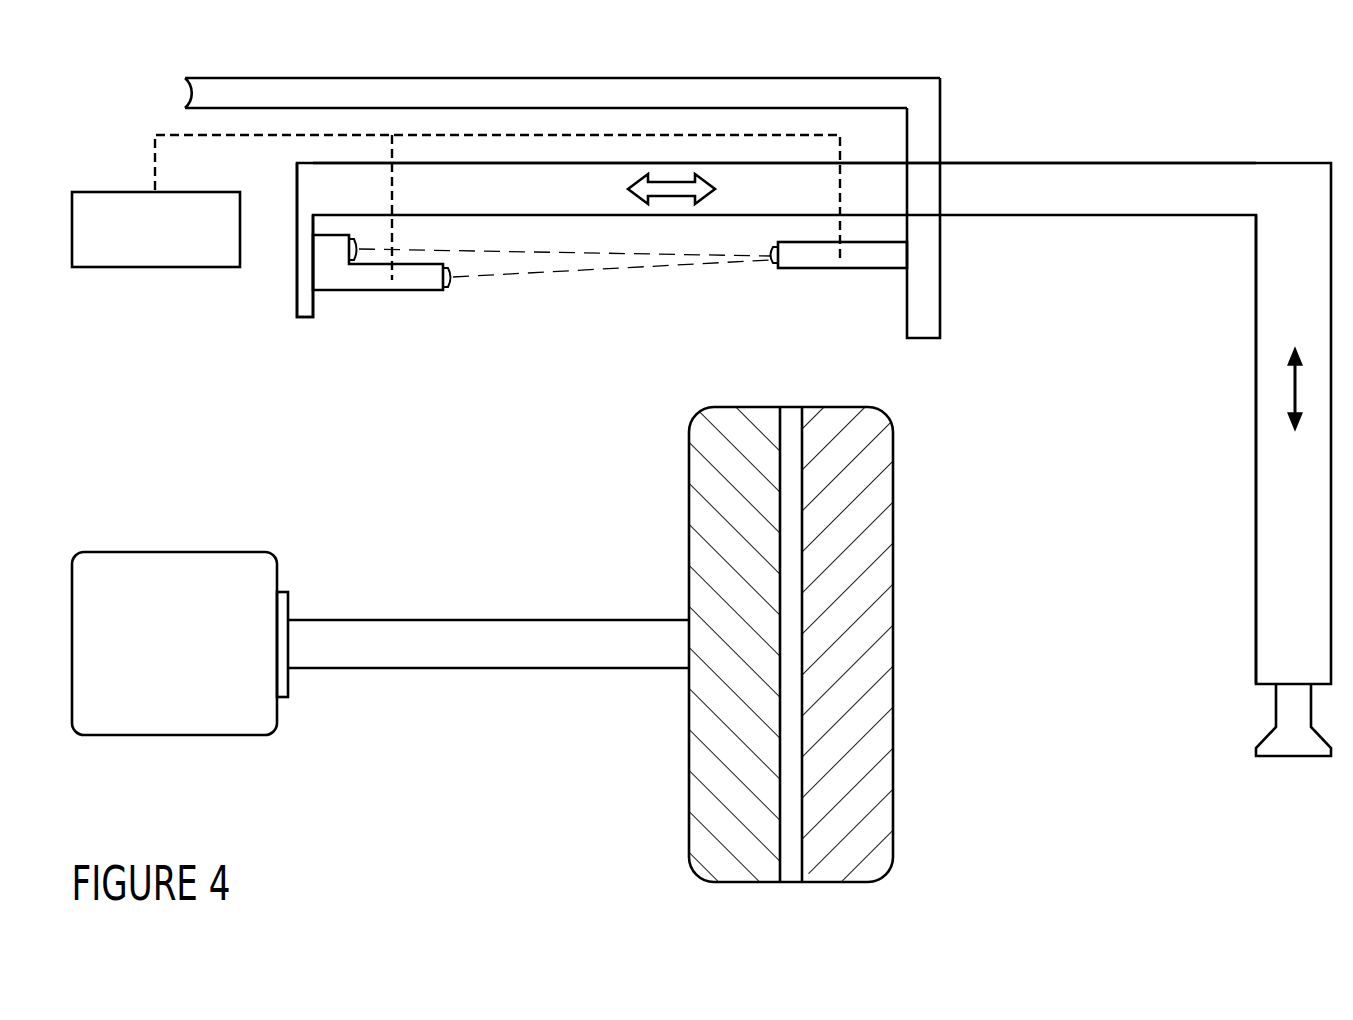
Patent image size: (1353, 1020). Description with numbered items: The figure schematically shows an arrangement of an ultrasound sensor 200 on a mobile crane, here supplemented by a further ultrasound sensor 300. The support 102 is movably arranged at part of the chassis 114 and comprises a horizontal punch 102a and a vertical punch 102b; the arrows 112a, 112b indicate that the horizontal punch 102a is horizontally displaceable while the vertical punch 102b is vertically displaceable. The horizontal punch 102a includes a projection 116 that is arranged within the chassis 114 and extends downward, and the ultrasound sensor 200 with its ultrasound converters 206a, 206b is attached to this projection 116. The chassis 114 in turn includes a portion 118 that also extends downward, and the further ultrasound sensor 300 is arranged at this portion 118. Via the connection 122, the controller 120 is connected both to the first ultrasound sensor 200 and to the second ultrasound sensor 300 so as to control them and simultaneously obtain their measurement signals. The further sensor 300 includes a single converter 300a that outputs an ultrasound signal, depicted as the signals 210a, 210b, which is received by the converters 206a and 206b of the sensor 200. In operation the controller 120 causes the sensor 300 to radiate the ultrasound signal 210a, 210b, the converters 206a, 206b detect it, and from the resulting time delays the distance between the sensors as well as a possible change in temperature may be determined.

The support 102 is at (1230, 240).
The horizontal punch 102a is at (1133, 177).
The vertical punch 102b is at (1275, 521).
The arrow 112a is at (670, 178).
The arrow 112b is at (1293, 388).
The chassis 114 is at (560, 95).
The projection 116 is at (295, 297).
The portion 118 is at (931, 288).
The controller 120 is at (157, 269).
The connection 122 is at (154, 150).
The ultrasound sensor 200 is at (408, 292).
The ultrasound converter 206a is at (357, 263).
The ultrasound converter 206b is at (452, 287).
The ultrasound signal 210a is at (564, 258).
The ultrasound signal 210b is at (640, 264).
The further ultrasound sensor 300 is at (845, 270).
The converter 300a is at (770, 266).